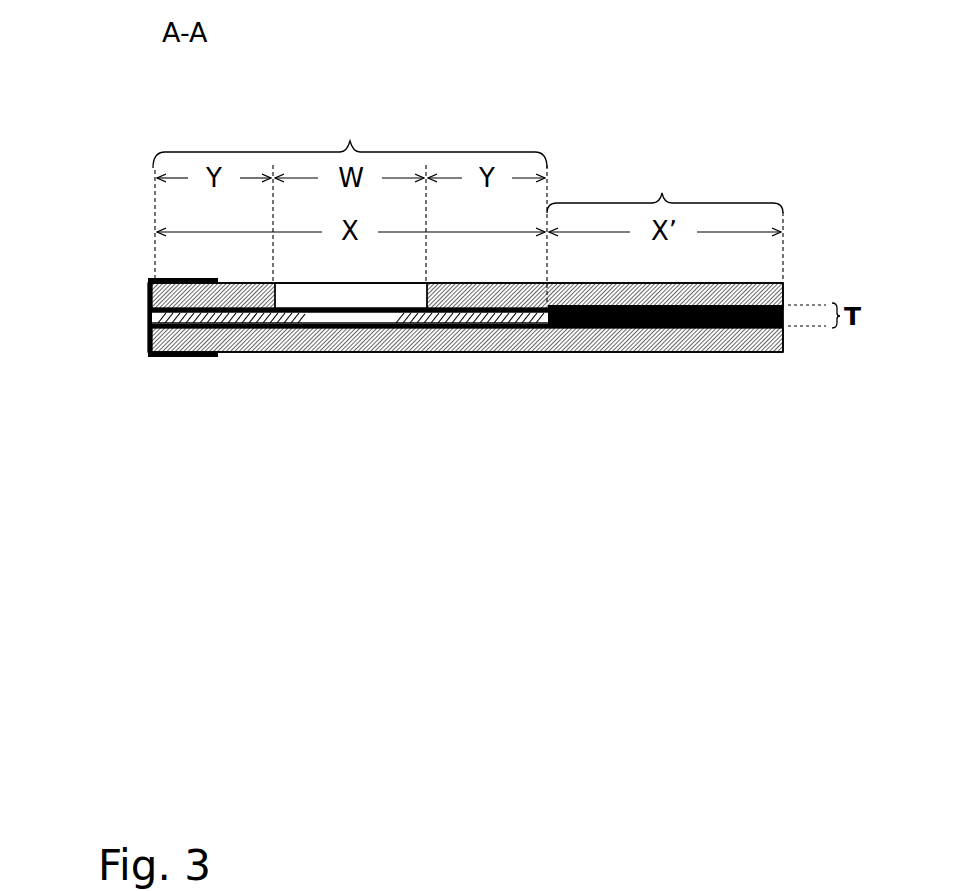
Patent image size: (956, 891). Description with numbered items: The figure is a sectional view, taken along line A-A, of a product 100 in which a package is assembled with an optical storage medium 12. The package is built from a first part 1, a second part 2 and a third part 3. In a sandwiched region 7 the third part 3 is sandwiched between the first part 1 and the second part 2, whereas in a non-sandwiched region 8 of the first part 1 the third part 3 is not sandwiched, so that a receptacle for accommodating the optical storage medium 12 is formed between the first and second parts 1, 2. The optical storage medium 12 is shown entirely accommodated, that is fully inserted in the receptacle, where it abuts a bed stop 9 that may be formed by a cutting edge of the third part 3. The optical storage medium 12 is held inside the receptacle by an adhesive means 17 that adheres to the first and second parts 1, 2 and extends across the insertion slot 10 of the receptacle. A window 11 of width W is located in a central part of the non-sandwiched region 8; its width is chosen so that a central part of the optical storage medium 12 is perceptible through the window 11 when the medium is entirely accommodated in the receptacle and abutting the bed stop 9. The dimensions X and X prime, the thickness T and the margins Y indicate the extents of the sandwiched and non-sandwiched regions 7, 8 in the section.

The piezoelectric device 100 is at (406, 384).
The first part 1 is at (414, 283).
The second part 2 is at (131, 338).
The third part 3 is at (652, 364).
The sandwiched region 7 is at (665, 187).
The non-sandwiched region 8 is at (350, 138).
The bed stop 9 is at (350, 373).
The insertion slot 10 is at (293, 309).
The window 11 is at (232, 260).
The optical storage medium 12 is at (410, 344).
The adhesive means 17 is at (128, 392).